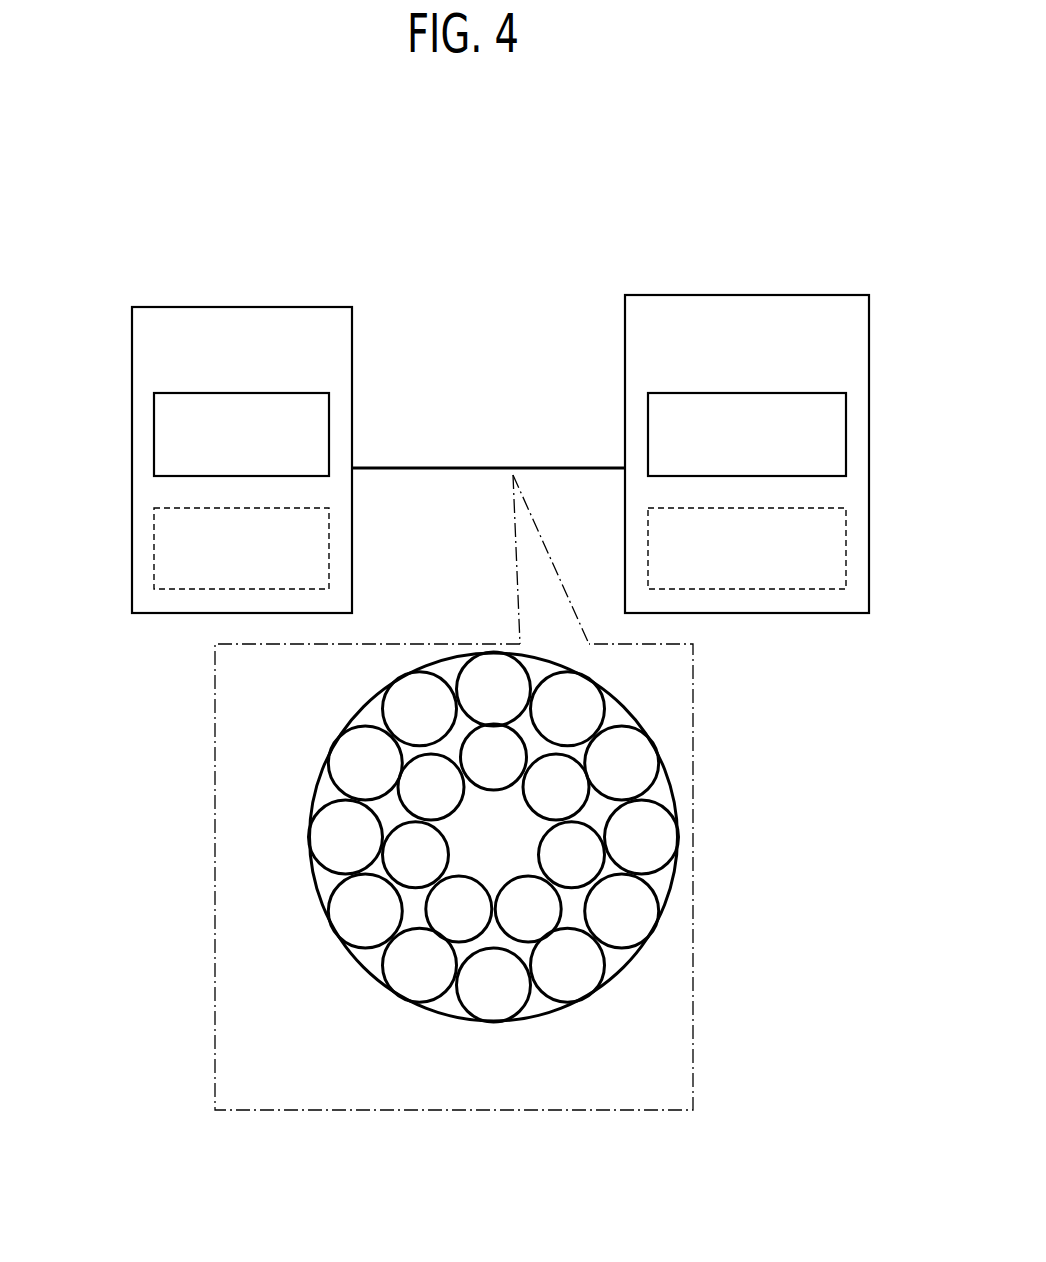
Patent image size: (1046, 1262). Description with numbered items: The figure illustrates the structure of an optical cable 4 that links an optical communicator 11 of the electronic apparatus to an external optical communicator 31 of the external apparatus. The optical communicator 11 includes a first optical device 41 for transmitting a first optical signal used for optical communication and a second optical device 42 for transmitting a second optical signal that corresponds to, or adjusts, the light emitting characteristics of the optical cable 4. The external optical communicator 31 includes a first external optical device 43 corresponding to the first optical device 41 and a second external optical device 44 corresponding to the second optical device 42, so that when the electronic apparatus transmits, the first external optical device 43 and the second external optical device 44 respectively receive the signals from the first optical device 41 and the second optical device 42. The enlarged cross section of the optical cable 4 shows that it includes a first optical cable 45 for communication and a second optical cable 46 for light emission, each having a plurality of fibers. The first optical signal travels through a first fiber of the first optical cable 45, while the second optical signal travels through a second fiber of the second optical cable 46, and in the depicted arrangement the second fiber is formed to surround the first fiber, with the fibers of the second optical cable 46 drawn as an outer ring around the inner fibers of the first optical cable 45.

The optical communicator 11 is at (132, 340).
The first optical device 41 is at (154, 436).
The second optical device 42 is at (154, 549).
The external optical communicator 31 is at (869, 327).
The first external optical device 43 is at (846, 432).
The second external optical device 44 is at (846, 547).
The optical cable 4 is at (546, 466).
The first optical cable 45 is at (513, 925).
The second optical cable 46 is at (340, 773).